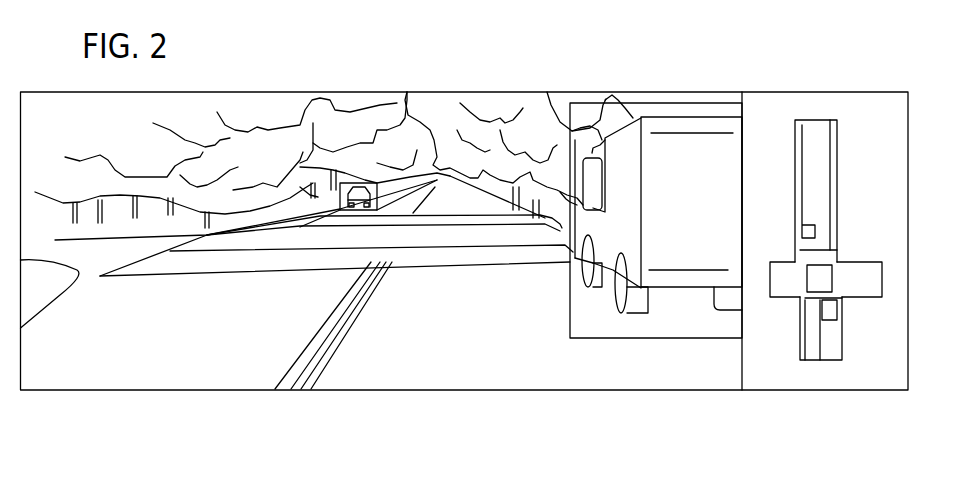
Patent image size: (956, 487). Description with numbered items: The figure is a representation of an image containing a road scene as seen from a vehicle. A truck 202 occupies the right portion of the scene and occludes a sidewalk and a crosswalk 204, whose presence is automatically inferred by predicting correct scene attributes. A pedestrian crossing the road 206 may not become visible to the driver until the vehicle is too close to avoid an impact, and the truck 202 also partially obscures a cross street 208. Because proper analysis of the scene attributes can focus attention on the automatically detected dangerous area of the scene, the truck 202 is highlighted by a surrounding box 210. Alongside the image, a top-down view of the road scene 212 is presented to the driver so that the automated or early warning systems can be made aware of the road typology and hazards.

The truck 202 is at (665, 163).
The crosswalk 204 is at (336, 303).
The road 206 is at (207, 365).
The cross street 208 is at (308, 269).
The surrounding box 210 is at (656, 274).
The top-down view of the road scene 212 is at (826, 291).